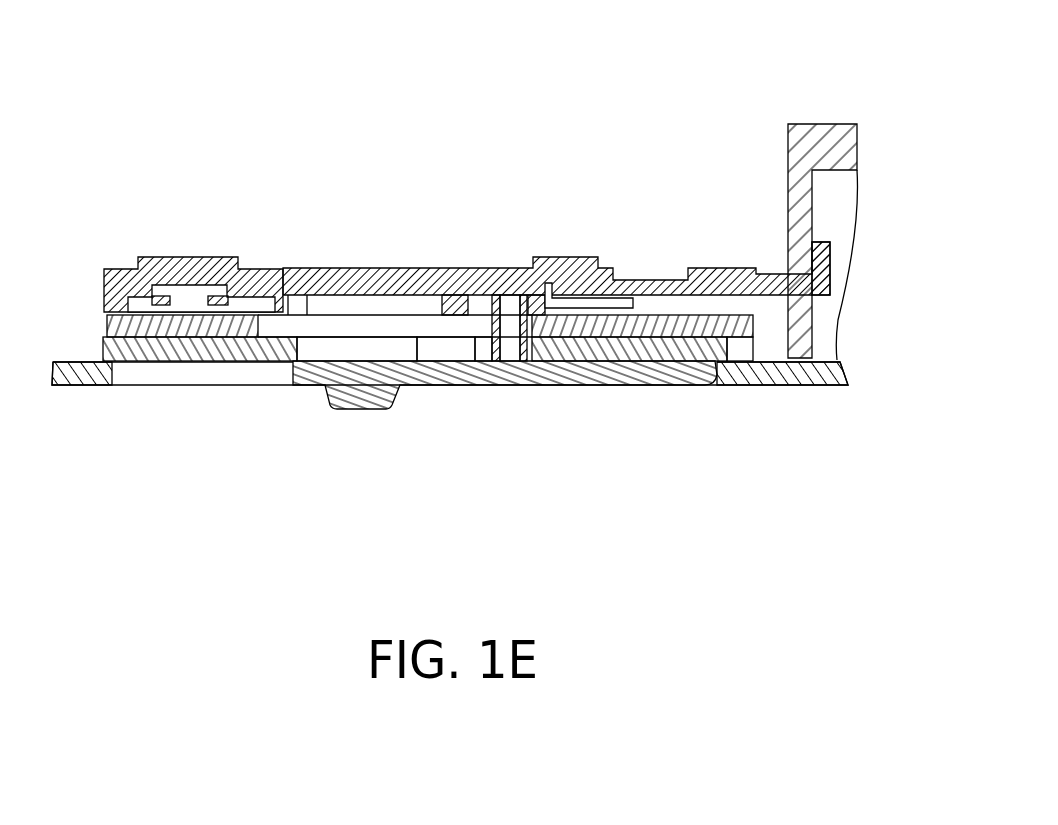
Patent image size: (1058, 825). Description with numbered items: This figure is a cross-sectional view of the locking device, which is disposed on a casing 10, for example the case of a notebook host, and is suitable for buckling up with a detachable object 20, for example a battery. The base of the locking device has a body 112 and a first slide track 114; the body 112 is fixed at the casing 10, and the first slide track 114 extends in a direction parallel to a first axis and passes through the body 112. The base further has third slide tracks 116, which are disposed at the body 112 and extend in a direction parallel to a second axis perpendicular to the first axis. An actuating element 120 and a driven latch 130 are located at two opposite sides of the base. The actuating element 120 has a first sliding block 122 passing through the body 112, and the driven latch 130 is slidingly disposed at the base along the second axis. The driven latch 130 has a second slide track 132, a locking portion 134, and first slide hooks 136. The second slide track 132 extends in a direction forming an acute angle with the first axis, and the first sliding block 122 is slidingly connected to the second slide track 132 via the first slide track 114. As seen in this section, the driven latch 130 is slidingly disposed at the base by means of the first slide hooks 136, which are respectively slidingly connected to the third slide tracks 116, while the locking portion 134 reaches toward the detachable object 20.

The casing 10 is at (655, 345).
The detachable object 20 is at (808, 140).
The body 112 is at (710, 327).
The first slide track 114 is at (318, 327).
The third slide track 116 is at (192, 298).
The actuating element 120 is at (447, 368).
The first sliding block 122 is at (527, 362).
The driven latch 130 is at (449, 275).
The second slide track 132 is at (488, 304).
The locking portion 134 is at (815, 282).
The first slide hook 136 is at (257, 300).